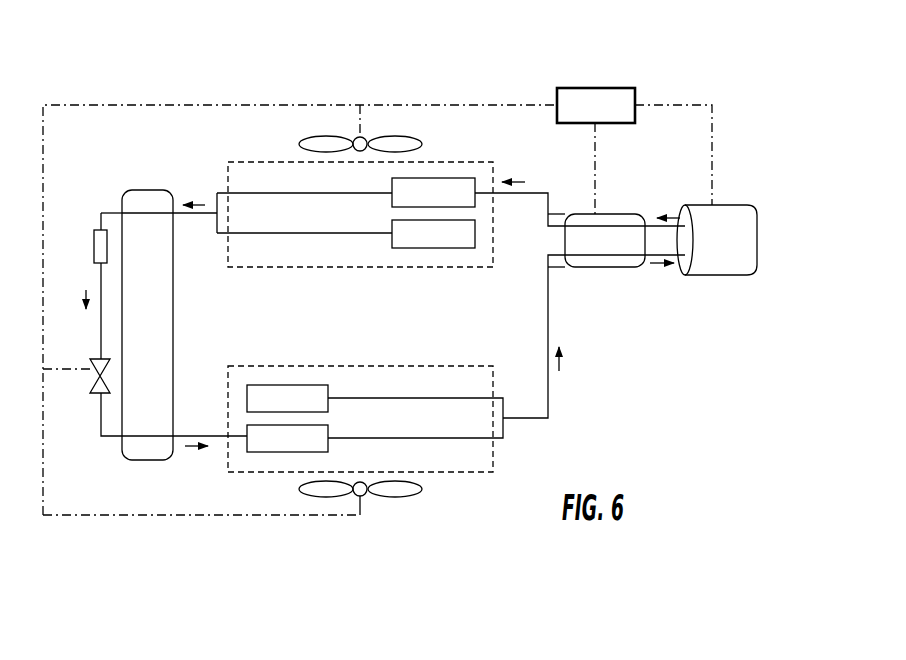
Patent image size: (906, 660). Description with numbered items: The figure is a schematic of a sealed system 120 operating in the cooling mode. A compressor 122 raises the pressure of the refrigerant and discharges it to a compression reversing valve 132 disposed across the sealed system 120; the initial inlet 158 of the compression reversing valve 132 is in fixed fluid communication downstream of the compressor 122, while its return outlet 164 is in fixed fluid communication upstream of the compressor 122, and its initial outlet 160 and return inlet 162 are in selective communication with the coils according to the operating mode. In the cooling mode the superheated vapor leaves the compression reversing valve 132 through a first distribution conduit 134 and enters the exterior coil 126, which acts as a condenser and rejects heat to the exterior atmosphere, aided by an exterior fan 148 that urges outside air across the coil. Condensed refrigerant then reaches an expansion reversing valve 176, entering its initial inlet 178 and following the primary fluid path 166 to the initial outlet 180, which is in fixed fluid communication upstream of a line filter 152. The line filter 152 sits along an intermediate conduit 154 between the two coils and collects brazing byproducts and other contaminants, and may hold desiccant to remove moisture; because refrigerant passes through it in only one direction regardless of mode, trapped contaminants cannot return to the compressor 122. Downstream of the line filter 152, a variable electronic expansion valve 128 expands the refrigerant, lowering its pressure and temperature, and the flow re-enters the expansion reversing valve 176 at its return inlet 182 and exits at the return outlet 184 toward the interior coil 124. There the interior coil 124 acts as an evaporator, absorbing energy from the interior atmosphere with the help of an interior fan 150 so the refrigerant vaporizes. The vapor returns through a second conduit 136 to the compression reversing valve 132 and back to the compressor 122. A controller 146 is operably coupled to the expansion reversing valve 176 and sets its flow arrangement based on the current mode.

The sealed system 120 is at (752, 116).
The compressor 122 is at (758, 236).
The interior coil 124 is at (483, 472).
The exterior coil 126 is at (453, 160).
The variable electronic expansion valve 128 is at (90, 390).
The compression reversing valve 132 is at (611, 267).
The first distribution conduit 134 is at (548, 192).
The second conduit 136 is at (549, 410).
The controller 146 is at (590, 88).
The exterior fan 148 is at (404, 138).
The interior fan 150 is at (402, 495).
The line filter 152 is at (93, 246).
The intermediate conduit 154 is at (99, 331).
The initial inlet 158 is at (652, 212).
The initial outlet 160 is at (561, 213).
The return inlet 162 is at (564, 268).
The return outlet 164 is at (651, 272).
The primary fluid path 166 is at (149, 212).
The expansion reversing valve 176 is at (174, 342).
The initial inlet 178 is at (182, 225).
The initial outlet 180 is at (115, 203).
The return inlet 182 is at (116, 441).
The return outlet 184 is at (177, 430).